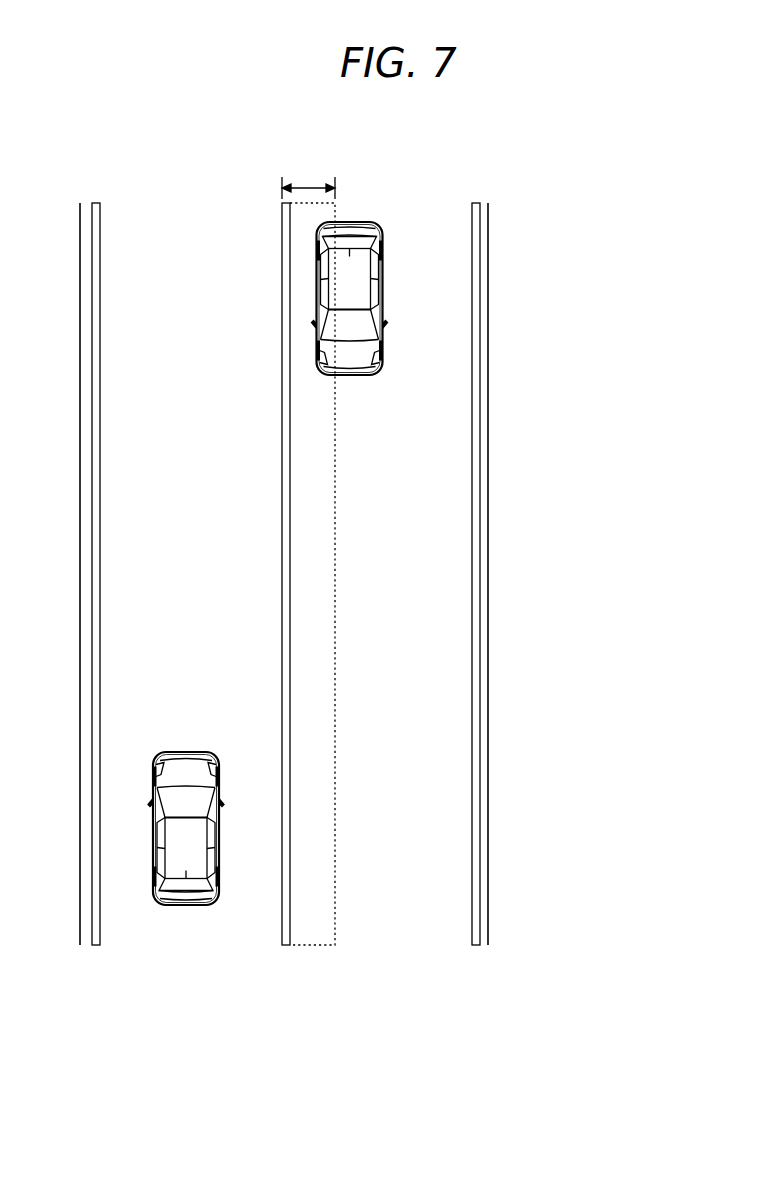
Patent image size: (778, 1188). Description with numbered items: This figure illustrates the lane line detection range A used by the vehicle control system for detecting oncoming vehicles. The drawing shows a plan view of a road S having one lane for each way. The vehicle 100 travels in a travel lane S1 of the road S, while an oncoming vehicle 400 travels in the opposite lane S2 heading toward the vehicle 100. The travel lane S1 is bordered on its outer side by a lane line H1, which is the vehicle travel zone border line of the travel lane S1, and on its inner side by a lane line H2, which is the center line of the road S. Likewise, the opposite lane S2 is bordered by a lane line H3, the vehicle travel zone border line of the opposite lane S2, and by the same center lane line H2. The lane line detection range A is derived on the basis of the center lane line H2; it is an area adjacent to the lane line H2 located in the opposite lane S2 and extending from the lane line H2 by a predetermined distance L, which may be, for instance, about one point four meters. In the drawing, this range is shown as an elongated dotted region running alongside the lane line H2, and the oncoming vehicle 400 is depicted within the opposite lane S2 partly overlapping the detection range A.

The vehicle 100 is at (151, 807).
The oncoming vehicle 400 is at (383, 292).
The lane line H1 is at (96, 945).
The lane line H2 is at (285, 945).
The lane line H3 is at (476, 945).
The lane line detection range A is at (335, 583).
The predetermined distance L is at (308, 180).
The road S is at (398, 136).
The travel lane S1 is at (178, 208).
The opposite lane S2 is at (388, 208).